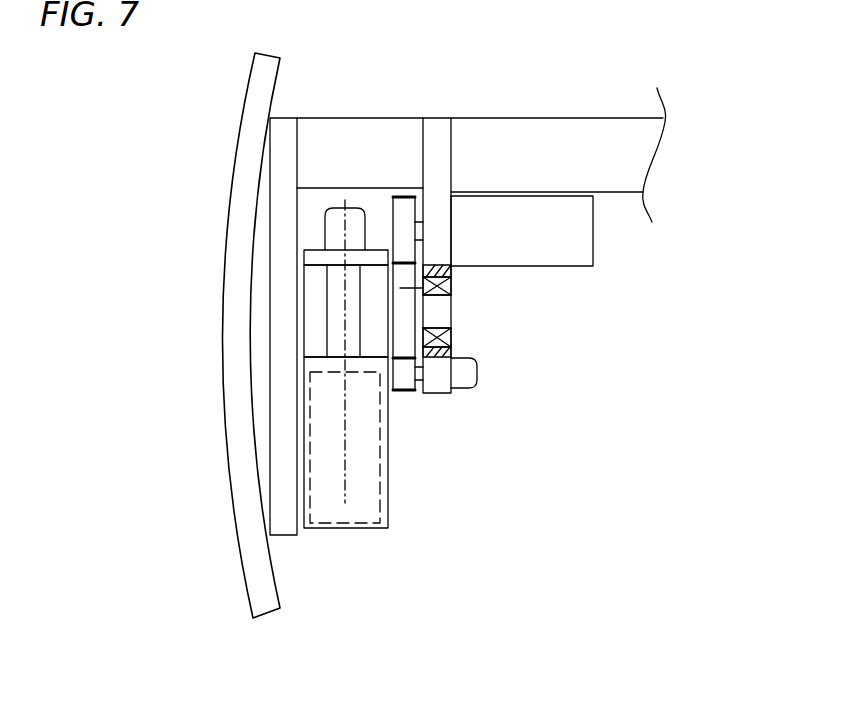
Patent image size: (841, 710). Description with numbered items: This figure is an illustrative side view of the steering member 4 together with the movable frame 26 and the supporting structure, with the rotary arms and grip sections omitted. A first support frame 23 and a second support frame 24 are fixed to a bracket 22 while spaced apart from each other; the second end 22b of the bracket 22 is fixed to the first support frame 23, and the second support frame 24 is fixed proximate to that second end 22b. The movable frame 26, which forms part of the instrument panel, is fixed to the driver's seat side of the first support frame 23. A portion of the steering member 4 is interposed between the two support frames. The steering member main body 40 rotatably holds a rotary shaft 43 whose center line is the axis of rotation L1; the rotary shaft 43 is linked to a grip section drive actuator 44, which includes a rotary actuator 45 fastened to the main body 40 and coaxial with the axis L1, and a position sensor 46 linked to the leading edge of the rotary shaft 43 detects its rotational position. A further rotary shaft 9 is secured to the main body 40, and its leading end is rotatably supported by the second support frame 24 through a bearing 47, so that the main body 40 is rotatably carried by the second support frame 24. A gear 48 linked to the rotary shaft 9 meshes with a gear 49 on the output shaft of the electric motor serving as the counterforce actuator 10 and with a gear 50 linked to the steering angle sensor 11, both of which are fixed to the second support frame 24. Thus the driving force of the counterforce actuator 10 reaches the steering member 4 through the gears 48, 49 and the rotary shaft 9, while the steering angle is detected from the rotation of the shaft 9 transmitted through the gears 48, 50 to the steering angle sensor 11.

The steering member 4 is at (372, 537).
The rotary shaft 9 is at (433, 317).
The counterforce actuator 10 is at (583, 237).
The steering angle sensor 11 is at (465, 372).
The bracket 22 is at (615, 132).
The second end 22b is at (367, 142).
The first support frame 23 is at (286, 125).
The second support frame 24 is at (435, 140).
The movable frame 26 is at (243, 192).
The steering member main body 40 is at (382, 452).
The rotary shaft 43 is at (332, 302).
The grip section drive actuator 44 is at (383, 472).
The rotary actuator 45 is at (355, 505).
The position sensor 46 is at (333, 223).
The bearing 47 is at (445, 337).
The gear 48 is at (447, 280).
The gear 49 is at (403, 210).
The gear 50 is at (402, 378).
The axis of rotation L1 is at (342, 485).